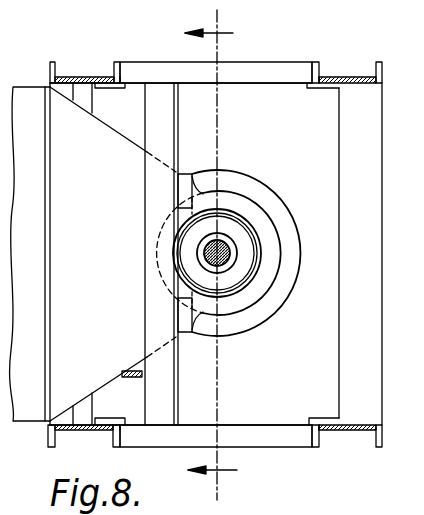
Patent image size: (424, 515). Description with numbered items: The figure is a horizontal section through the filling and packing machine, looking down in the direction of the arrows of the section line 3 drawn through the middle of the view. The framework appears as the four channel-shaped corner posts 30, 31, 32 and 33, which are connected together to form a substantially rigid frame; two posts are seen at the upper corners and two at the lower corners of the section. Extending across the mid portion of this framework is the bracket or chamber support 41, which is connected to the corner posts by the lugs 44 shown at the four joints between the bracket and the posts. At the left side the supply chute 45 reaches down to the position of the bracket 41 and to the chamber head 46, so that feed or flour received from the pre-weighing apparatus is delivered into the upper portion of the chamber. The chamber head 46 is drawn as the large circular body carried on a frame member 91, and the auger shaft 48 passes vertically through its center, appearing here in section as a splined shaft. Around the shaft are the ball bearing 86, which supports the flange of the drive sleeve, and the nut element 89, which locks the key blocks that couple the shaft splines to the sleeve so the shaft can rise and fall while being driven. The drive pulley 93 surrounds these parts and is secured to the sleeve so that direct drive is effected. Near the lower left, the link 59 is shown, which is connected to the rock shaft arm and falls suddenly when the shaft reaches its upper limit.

The section line 3 is at (212, 255).
The corner post 30 is at (339, 430).
The corner post 31 is at (335, 80).
The corner post 32 is at (69, 79).
The corner post 33 is at (68, 428).
The bracket or chamber support 41 is at (283, 103).
The lug 44 is at (125, 82).
The supply chute 45 is at (60, 254).
The chamber head 46 is at (227, 182).
The auger shaft 48 is at (230, 250).
The link 59 is at (126, 378).
The ball bearing 86 is at (232, 228).
The nut element 89 is at (230, 268).
The frame member 91 is at (150, 366).
The drive pulley 93 is at (260, 302).